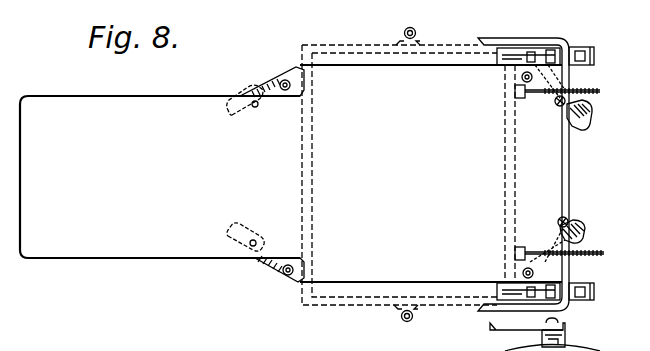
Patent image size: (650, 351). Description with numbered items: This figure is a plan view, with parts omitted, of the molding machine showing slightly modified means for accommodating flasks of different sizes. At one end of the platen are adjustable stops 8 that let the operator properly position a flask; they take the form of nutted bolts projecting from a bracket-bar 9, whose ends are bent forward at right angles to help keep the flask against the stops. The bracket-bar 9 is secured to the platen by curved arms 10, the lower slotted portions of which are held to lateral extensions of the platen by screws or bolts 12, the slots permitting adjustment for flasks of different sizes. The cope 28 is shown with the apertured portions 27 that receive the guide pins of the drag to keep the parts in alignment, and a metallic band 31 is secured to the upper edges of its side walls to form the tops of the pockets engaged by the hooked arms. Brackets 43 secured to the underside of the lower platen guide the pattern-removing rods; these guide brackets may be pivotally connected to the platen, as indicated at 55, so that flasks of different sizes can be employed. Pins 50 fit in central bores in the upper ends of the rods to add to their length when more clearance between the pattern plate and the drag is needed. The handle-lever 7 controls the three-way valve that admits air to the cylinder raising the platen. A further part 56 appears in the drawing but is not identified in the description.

The handle-lever 7 is at (160, 248).
The stops 8 is at (515, 92).
The bracket-bar 9 is at (566, 180).
The curved arms 10 is at (594, 56).
The screws or bolts 12 is at (550, 50).
The apertured portions of cope 27 is at (417, 31).
The cope 28 is at (310, 305).
The metallic band 31 is at (343, 52).
The brackets 43 is at (240, 120).
The pins 50 is at (284, 92).
The pivotal connection of guide brackets 55 is at (256, 99).
The support 56 is at (405, 348).